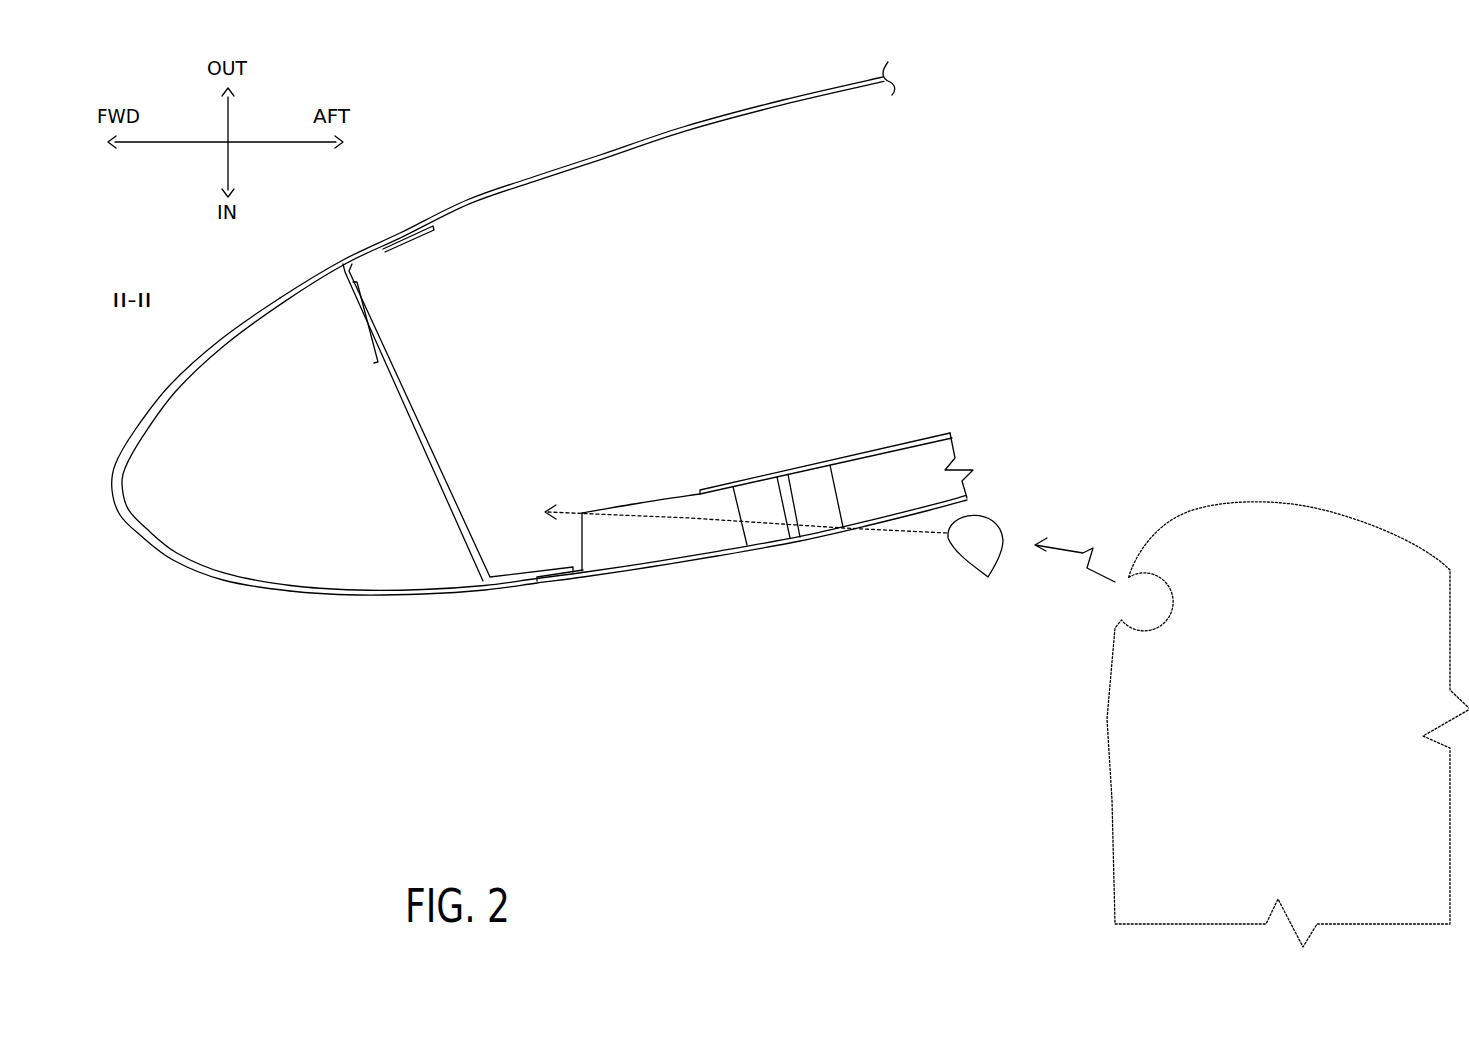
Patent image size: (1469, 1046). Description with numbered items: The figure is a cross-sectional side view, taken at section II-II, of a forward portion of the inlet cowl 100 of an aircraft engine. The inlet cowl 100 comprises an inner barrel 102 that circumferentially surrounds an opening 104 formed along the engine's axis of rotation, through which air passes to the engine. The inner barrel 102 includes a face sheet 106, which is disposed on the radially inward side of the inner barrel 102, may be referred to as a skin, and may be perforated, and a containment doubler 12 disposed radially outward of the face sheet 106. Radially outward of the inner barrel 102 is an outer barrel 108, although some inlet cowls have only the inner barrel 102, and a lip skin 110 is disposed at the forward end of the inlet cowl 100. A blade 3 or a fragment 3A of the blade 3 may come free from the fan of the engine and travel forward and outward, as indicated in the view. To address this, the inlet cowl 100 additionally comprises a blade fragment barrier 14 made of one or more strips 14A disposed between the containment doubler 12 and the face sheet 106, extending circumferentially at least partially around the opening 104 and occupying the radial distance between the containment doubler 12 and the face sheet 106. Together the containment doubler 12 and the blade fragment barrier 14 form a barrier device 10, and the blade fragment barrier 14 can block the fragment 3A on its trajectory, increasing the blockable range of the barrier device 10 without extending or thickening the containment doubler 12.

The inlet cowl 100 is at (209, 776).
The inner barrel 102 is at (1000, 465).
The opening 104 is at (494, 826).
The face sheet 106 is at (620, 577).
The outer barrel 108 is at (533, 177).
The lip skin 110 is at (153, 542).
The barrier device 10 is at (817, 480).
The containment doubler 12 is at (810, 468).
The blade fragment barrier 14 is at (760, 508).
The strip 14A is at (797, 537).
The blade 3 is at (1202, 504).
The fragment 3A is at (988, 577).